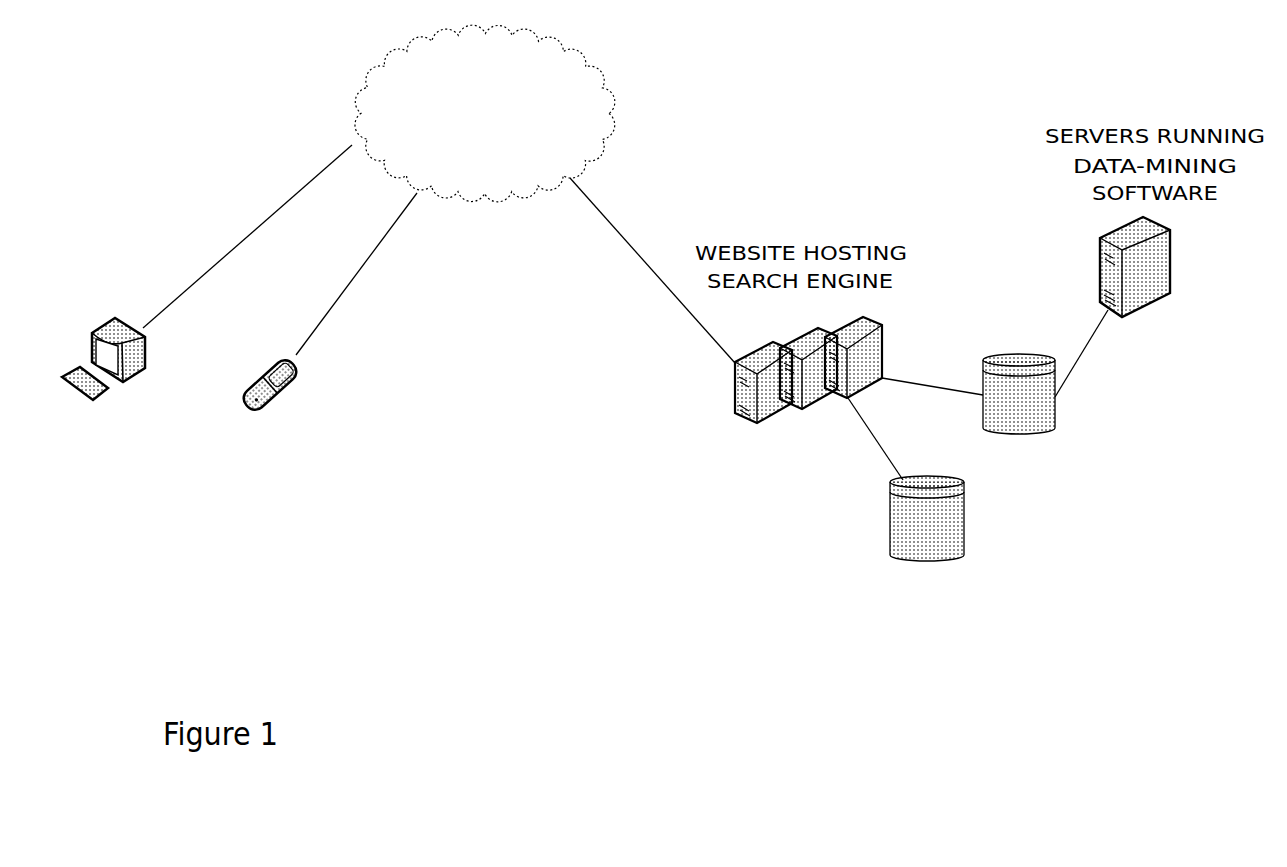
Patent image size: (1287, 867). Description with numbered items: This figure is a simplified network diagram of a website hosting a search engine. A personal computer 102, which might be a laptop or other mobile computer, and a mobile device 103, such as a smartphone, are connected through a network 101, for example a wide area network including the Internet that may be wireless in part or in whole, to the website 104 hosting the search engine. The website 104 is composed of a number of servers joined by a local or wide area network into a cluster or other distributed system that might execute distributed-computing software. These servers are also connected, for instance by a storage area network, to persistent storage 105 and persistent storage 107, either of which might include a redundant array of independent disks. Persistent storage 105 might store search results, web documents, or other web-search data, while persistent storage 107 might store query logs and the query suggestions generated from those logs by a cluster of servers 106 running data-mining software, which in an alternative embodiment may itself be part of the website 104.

The network 101 is at (595, 68).
The personal computer 102 is at (123, 387).
The mobile device 103 is at (273, 408).
The website hosting a search engine 104 is at (802, 413).
The persistent storage 105 is at (963, 557).
The cluster of servers 106 is at (1150, 303).
The persistent storage 107 is at (1020, 440).